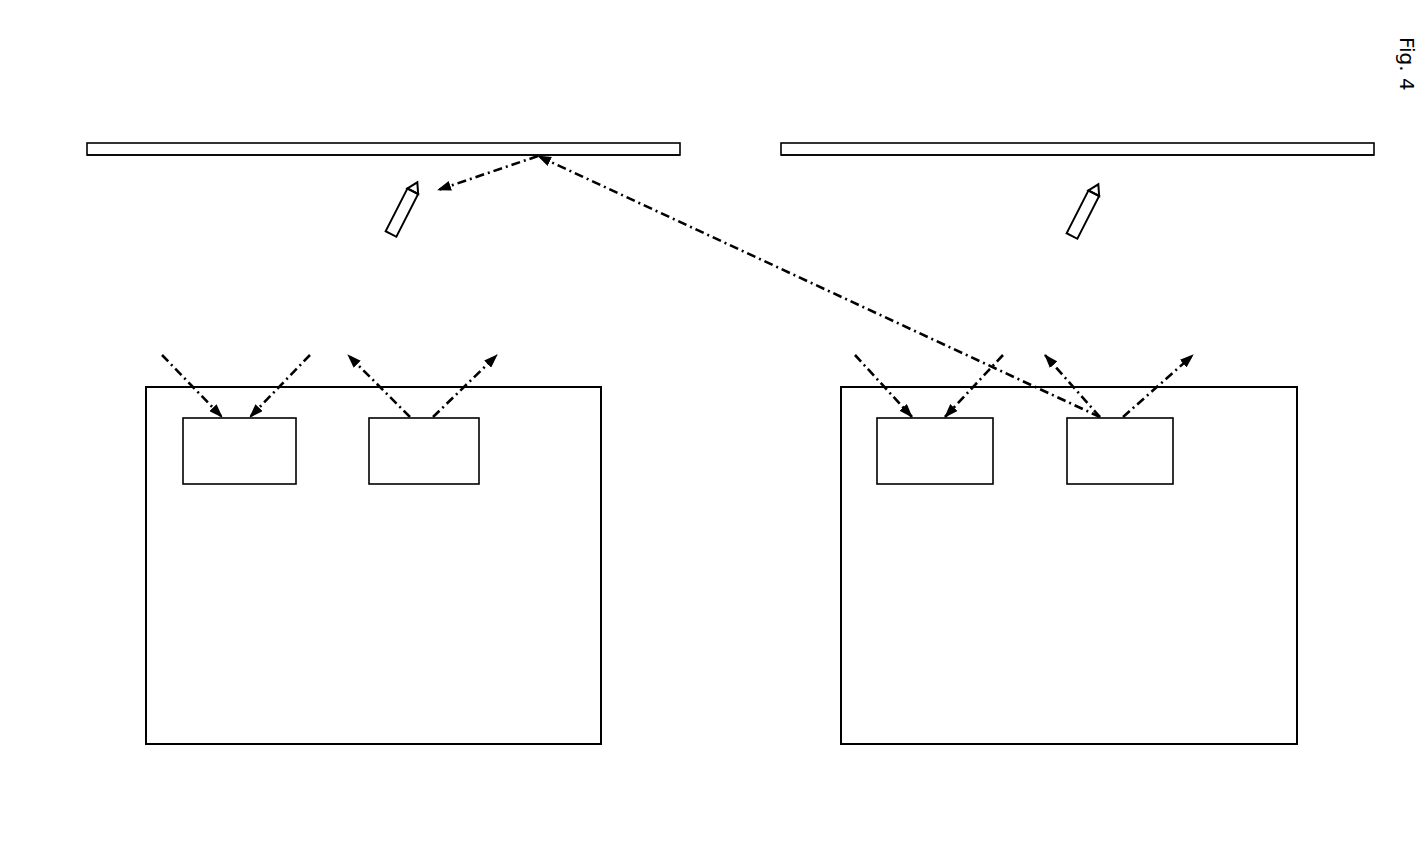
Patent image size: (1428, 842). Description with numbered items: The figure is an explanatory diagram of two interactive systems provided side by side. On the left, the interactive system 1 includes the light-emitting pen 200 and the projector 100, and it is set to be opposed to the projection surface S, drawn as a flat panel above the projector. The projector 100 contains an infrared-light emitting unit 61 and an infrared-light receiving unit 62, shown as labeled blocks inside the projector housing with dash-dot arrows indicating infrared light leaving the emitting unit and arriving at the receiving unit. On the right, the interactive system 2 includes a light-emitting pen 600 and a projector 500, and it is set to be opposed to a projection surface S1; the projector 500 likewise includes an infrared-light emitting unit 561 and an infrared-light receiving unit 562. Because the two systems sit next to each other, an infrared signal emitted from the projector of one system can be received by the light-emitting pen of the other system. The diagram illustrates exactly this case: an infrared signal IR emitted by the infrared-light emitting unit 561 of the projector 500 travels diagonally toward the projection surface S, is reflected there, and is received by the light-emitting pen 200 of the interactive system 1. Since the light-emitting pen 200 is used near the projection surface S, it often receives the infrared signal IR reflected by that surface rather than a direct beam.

The interactive system 1 is at (602, 100).
The interactive system 2 is at (1291, 99).
The projection surface S is at (325, 156).
The projection surface S1 is at (1020, 156).
The light-emitting pen 200 is at (401, 223).
The light-emitting pen 600 is at (1082, 225).
The infrared signal IR is at (818, 284).
The projector 100 is at (550, 387).
The projector 500 is at (1247, 387).
The infrared-light receiving unit 62 is at (252, 484).
The infrared-light emitting unit 61 is at (438, 484).
The infrared-light receiving unit 562 is at (932, 484).
The infrared-light emitting unit 561 is at (1120, 484).